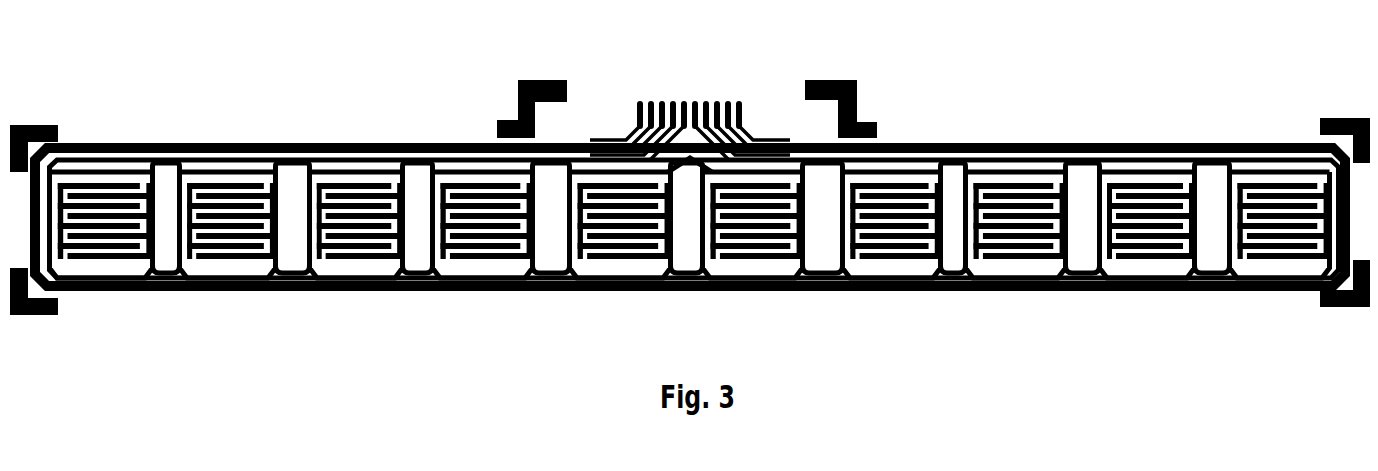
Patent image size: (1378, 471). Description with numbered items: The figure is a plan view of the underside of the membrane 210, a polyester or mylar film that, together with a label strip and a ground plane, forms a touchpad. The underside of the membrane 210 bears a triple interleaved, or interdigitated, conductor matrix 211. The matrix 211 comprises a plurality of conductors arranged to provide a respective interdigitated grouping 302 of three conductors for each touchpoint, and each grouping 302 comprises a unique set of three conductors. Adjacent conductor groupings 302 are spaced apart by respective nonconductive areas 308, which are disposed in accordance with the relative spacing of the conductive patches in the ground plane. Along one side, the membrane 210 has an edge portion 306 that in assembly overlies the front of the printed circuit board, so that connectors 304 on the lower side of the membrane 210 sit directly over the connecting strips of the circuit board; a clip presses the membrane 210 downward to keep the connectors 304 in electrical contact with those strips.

The membrane 210 is at (279, 92).
The interleaved conductor matrix 211 is at (1073, 142).
The interdigitated grouping 302 is at (122, 259).
The connectors 304 is at (636, 104).
The edge portion 306 is at (855, 112).
The nonconductive areas 308 is at (420, 262).